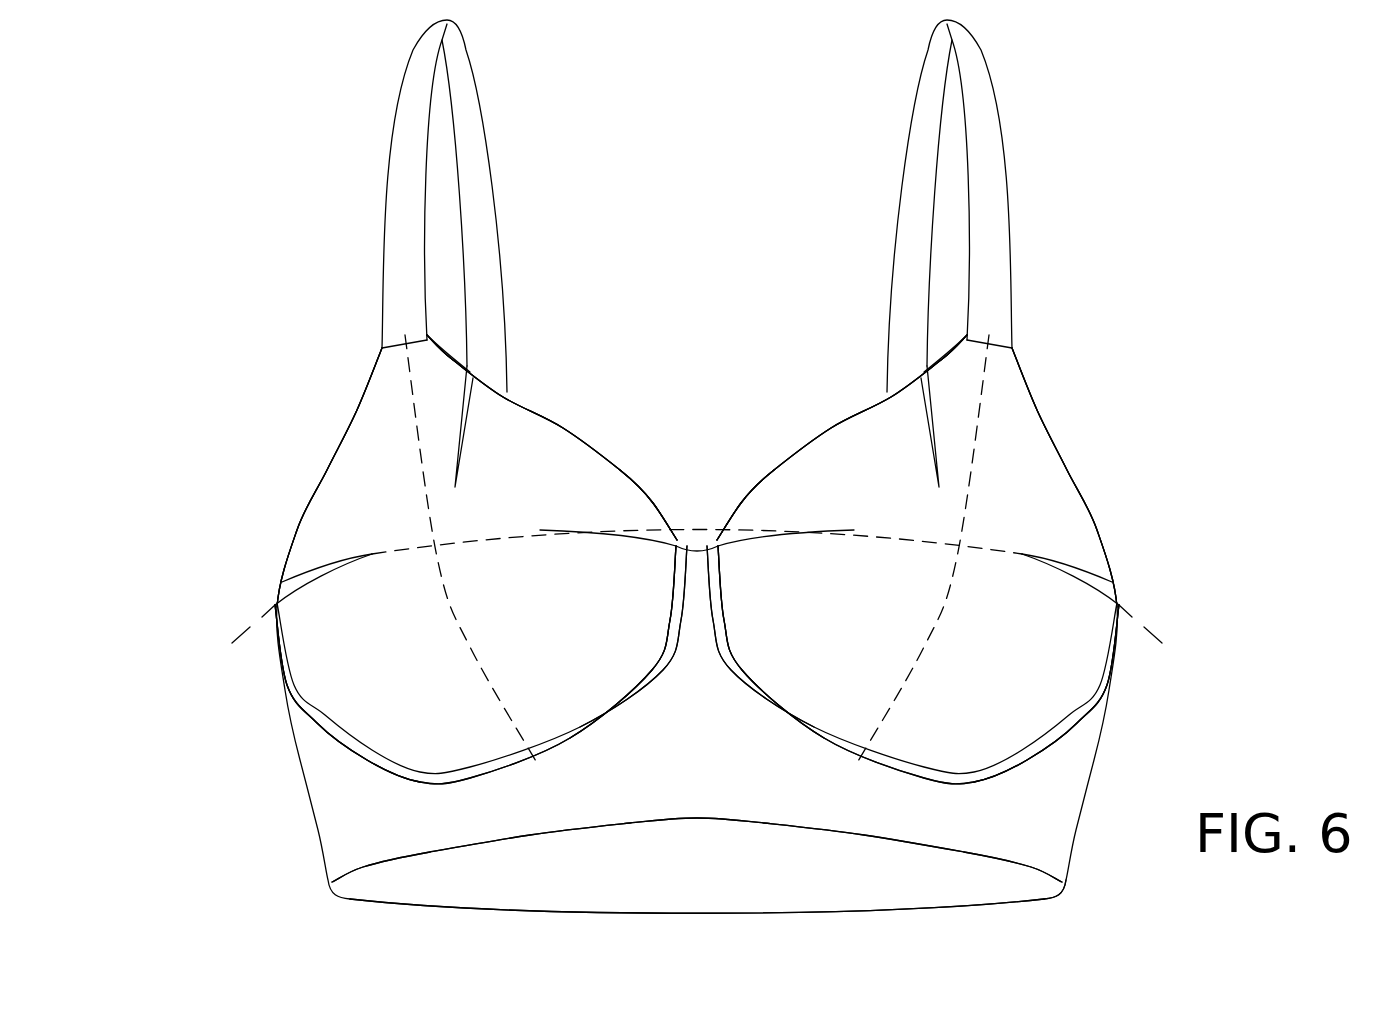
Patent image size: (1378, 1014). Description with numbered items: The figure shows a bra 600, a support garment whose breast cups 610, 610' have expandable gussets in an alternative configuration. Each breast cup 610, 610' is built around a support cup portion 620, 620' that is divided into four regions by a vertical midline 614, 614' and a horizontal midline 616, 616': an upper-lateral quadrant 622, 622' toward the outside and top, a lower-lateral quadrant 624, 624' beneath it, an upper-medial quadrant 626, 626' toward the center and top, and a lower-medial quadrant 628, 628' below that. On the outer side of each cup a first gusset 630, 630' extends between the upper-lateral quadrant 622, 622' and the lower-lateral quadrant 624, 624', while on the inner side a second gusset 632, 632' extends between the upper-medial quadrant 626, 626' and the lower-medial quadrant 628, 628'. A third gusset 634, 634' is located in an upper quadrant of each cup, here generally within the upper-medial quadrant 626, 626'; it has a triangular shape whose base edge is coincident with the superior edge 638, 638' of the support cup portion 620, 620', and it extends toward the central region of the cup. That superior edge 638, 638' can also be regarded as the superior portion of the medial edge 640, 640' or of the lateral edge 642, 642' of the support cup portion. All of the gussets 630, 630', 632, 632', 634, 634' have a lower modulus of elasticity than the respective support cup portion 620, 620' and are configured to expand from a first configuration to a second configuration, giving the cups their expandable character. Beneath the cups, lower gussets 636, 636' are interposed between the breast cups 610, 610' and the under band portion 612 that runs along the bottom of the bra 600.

The bra 600 is at (145, 208).
The breast cup 610 is at (409, 216).
The breast cup 610' is at (987, 216).
The under band portion 612 is at (1030, 828).
The vertical midline 614 is at (475, 690).
The vertical midline 614' is at (918, 690).
The horizontal midline 616 is at (213, 624).
The horizontal midline 616' is at (1180, 624).
The support cup portion 620 is at (476, 559).
The support cup portion 620' is at (918, 559).
The upper-lateral quadrant 622 is at (402, 549).
The upper-lateral quadrant 622' is at (994, 549).
The lower-lateral quadrant 624 is at (317, 693).
The lower-lateral quadrant 624' is at (1079, 693).
The upper-medial quadrant 626 is at (552, 437).
The upper-medial quadrant 626' is at (842, 437).
The lower-medial quadrant 628 is at (628, 642).
The lower-medial quadrant 628' is at (765, 642).
The first gusset 630 is at (330, 585).
The first gusset 630' is at (1059, 585).
The second gusset 632 is at (608, 521).
The second gusset 632' is at (786, 521).
The third gusset 634 is at (483, 426).
The third gusset 634' is at (908, 426).
The lower gusset 636 is at (482, 674).
The lower gusset 636' is at (912, 674).
The superior edge 638 is at (497, 336).
The superior edge 638' is at (892, 336).
The medial edge 640 is at (653, 486).
The medial edge 640' is at (738, 486).
The lateral edge 642 is at (312, 477).
The lateral edge 642' is at (1083, 477).